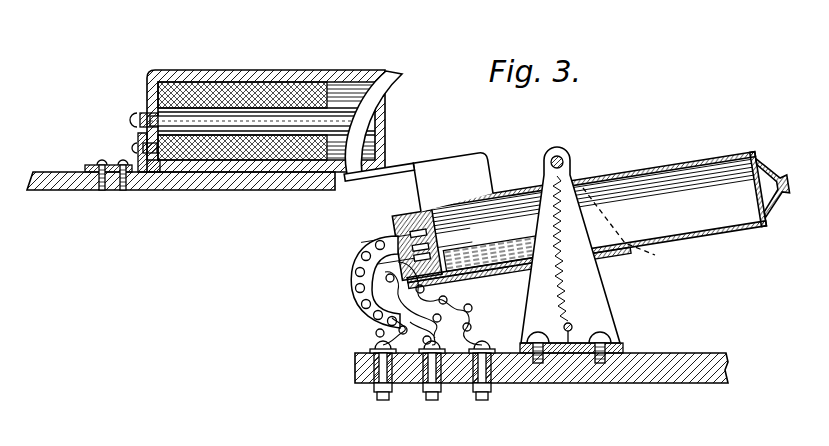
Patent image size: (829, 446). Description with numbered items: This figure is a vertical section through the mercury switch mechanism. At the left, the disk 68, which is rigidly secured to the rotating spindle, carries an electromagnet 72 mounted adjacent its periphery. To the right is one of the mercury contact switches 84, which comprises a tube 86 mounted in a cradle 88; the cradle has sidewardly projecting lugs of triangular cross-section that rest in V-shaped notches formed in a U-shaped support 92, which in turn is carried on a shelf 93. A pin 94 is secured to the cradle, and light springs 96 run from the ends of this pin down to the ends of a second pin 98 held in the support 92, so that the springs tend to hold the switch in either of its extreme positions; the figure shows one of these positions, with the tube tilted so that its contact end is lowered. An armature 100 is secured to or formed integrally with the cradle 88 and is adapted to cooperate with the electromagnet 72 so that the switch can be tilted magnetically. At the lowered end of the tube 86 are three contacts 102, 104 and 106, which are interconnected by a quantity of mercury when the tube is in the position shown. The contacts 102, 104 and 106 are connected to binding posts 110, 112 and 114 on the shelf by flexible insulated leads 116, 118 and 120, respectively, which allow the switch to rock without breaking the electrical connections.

The disk 68 is at (258, 183).
The electromagnet 72 is at (230, 95).
The mercury contact switch 84 is at (673, 243).
The tube 86 is at (666, 172).
The cradle 88 is at (610, 254).
The U-shaped support 92 is at (608, 322).
The shelf 93 is at (692, 382).
The pin 94 is at (567, 160).
The light spring 96 is at (573, 295).
The pin 98 is at (568, 343).
The armature 100 is at (368, 124).
The contact 102 is at (443, 207).
The contact 104 is at (495, 217).
The contact 106 is at (497, 241).
The binding post 110 is at (383, 400).
The binding post 112 is at (432, 400).
The binding post 114 is at (485, 400).
The flexible insulated lead 116 is at (355, 300).
The flexible insulated lead 118 is at (385, 320).
The flexible insulated lead 120 is at (378, 337).